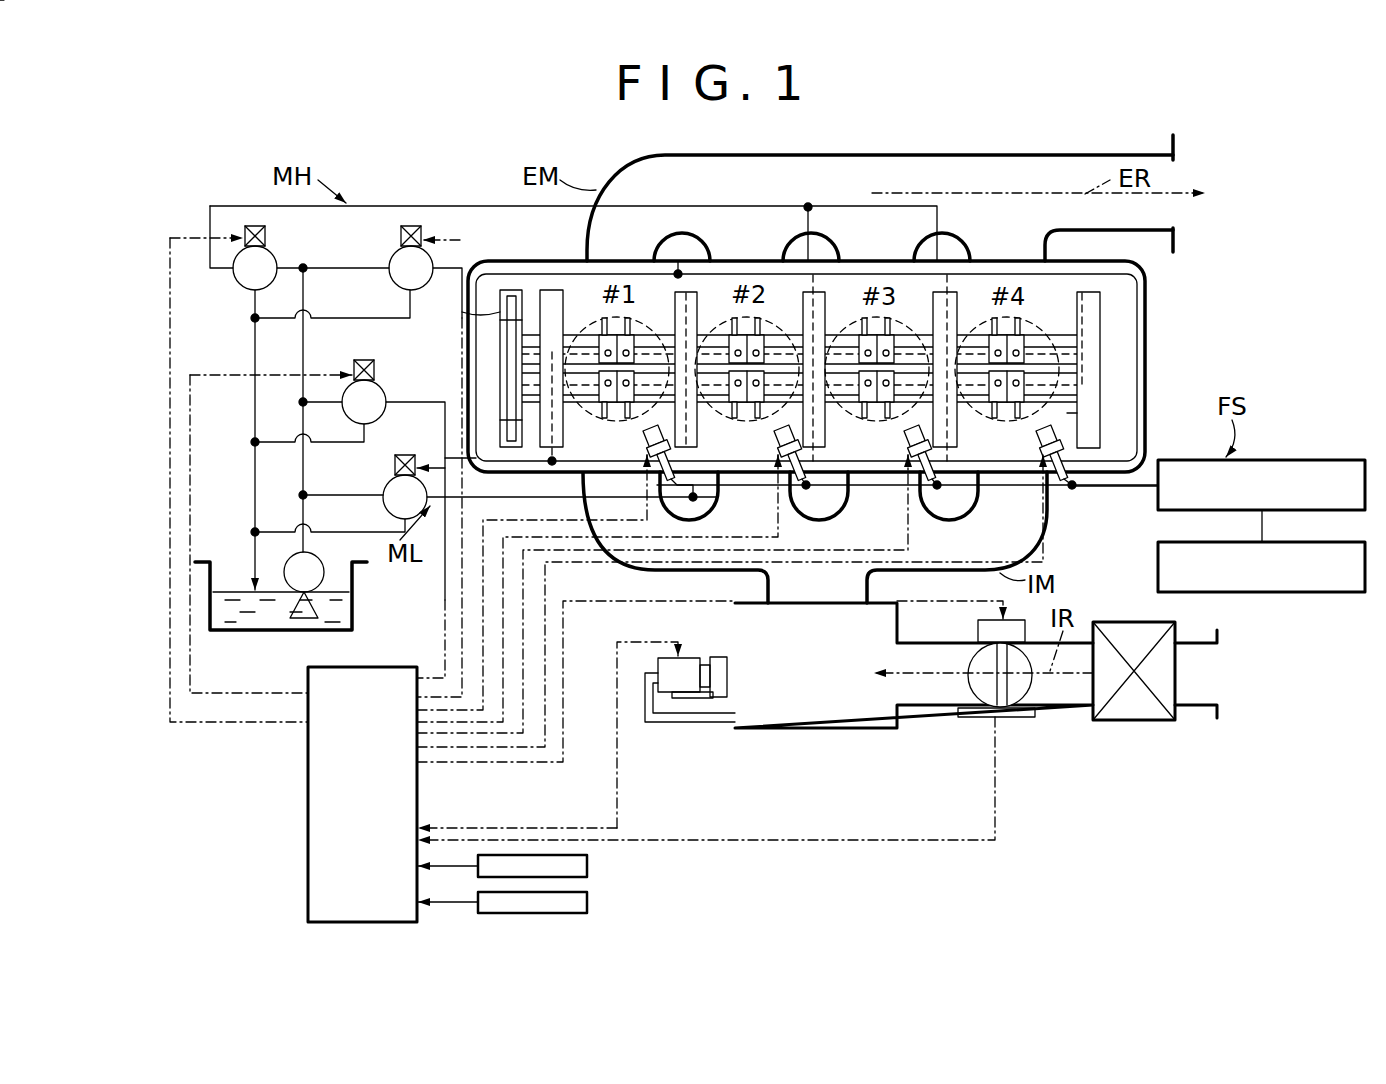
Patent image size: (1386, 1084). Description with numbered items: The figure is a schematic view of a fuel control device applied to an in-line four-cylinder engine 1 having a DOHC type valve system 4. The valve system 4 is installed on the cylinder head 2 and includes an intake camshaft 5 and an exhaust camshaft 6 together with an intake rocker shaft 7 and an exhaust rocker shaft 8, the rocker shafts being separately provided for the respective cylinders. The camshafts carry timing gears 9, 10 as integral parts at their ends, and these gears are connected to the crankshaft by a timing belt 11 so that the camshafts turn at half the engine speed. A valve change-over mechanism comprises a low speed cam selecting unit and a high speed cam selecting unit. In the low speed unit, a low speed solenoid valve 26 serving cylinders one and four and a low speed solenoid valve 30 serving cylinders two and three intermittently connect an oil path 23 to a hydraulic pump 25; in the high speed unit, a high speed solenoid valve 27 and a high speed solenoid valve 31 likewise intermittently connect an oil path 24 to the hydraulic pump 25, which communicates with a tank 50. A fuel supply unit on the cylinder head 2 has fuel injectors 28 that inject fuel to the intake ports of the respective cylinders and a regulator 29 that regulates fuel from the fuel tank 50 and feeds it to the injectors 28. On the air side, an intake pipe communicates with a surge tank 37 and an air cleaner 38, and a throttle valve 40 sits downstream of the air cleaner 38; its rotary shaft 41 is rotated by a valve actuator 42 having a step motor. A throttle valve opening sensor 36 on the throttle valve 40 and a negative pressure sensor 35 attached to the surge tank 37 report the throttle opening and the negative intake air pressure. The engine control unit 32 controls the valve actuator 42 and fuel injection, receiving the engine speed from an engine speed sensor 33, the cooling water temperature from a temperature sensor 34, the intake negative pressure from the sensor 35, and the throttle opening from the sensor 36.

The engine 1 is at (1197, 312).
The cylinder head 2 is at (567, 261).
The valve system 4 is at (978, 298).
The intake camshaft 5 is at (1067, 413).
The exhaust camshaft 6 is at (1078, 335).
The intake rocker shaft 7 is at (1085, 392).
The exhaust rocker shaft 8 is at (1083, 357).
The timing gear 9 is at (500, 398).
The timing gear 10 is at (462, 312).
The timing belt 11 is at (510, 289).
The oil path 23 is at (607, 498).
The oil path 24 is at (648, 210).
The hydraulic pump 25 is at (316, 578).
The low speed solenoid valve 26 is at (377, 376).
The high speed solenoid valve 27 is at (401, 238).
The fuel injector 28 is at (643, 438).
The regulator 29 is at (1338, 460).
The low speed solenoid valve 30 is at (405, 455).
The high speed solenoid valve 31 is at (263, 262).
The engine control unit 32 is at (398, 678).
The engine speed sensor 33 is at (588, 866).
The temperature sensor 34 is at (588, 902).
The negative pressure sensor 35 is at (690, 658).
The throttle valve opening sensor 36 is at (1017, 720).
The surge tank 37 is at (865, 730).
The air cleaner 38 is at (1132, 722).
The throttle valve 40 is at (1022, 689).
The rotary shaft 41 is at (977, 688).
The valve actuator 42 is at (980, 632).
The fuel tank 50 is at (1310, 592).